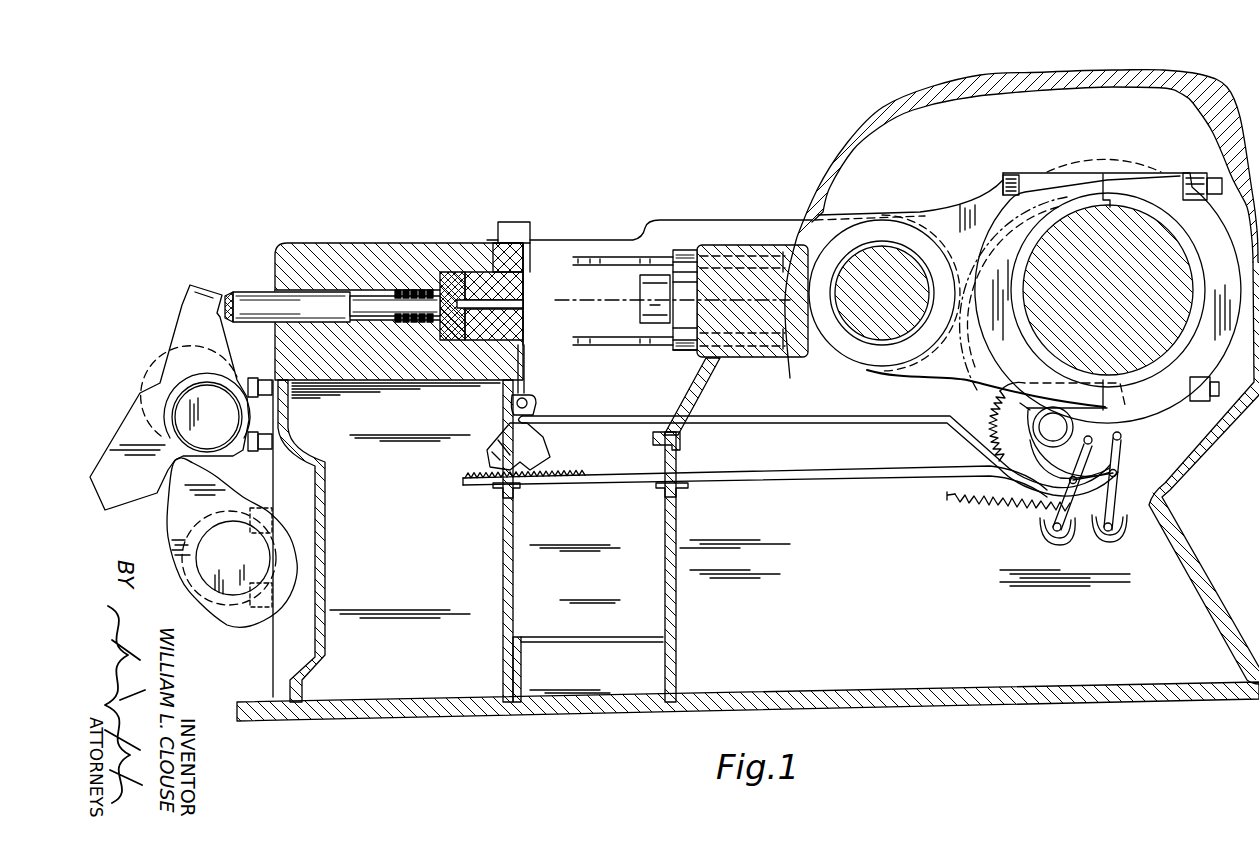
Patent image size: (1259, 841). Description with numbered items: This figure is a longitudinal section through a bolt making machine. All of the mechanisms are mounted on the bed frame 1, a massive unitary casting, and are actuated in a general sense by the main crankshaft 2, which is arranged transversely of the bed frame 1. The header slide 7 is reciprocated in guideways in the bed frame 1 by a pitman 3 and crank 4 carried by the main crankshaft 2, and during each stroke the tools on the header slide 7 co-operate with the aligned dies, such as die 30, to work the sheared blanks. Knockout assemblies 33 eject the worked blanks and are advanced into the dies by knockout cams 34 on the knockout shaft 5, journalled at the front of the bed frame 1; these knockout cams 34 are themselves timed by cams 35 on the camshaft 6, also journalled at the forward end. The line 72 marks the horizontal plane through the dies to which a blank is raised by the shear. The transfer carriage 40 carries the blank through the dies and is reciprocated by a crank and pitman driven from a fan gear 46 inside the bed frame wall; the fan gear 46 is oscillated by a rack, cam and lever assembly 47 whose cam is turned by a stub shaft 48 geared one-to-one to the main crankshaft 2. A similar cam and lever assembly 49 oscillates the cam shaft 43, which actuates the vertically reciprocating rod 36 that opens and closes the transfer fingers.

The bed frame 1 is at (870, 600).
The main crankshaft 2 is at (995, 396).
The pitman 3 is at (963, 350).
The crank 4 is at (1108, 291).
The knockout shaft 5 is at (191, 399).
The camshaft 6 is at (229, 558).
The header slide 7 is at (800, 360).
The die 30 is at (507, 290).
The knockout assemblies 33 is at (370, 283).
The knockout cams 34 is at (193, 347).
The cams 35 is at (190, 517).
The vertically reciprocating rod 36 is at (523, 367).
The transfer mechanism carriage 40 is at (513, 230).
The cam shaft 43 is at (535, 400).
The fan gear 46 is at (533, 447).
The rack, cam and lever assembly 47 is at (812, 474).
The stub shaft 48 is at (1037, 476).
The cam and lever assembly 49 is at (857, 423).
The horizontal plane line 72 is at (560, 301).